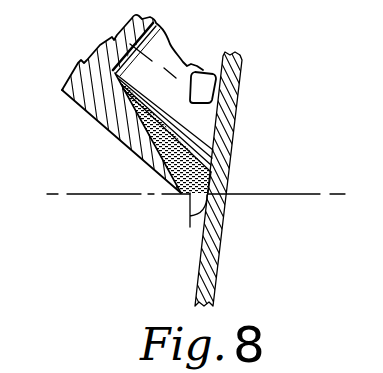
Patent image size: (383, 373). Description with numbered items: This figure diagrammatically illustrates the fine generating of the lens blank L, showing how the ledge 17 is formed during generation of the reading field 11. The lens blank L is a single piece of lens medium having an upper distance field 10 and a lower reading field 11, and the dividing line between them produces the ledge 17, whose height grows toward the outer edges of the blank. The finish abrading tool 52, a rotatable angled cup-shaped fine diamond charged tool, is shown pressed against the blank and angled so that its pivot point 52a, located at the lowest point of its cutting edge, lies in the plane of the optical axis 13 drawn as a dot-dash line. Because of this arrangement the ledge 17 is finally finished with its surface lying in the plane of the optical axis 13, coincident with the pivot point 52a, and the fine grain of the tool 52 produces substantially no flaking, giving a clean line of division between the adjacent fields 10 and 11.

The distance field 10 is at (197, 281).
The reading field 11 is at (205, 72).
The optical axis 13 is at (93, 195).
The ledge 17 is at (202, 206).
The fine abrading tool 52 is at (89, 123).
The pivot point 52a is at (200, 208).
The lens blank L is at (205, 240).